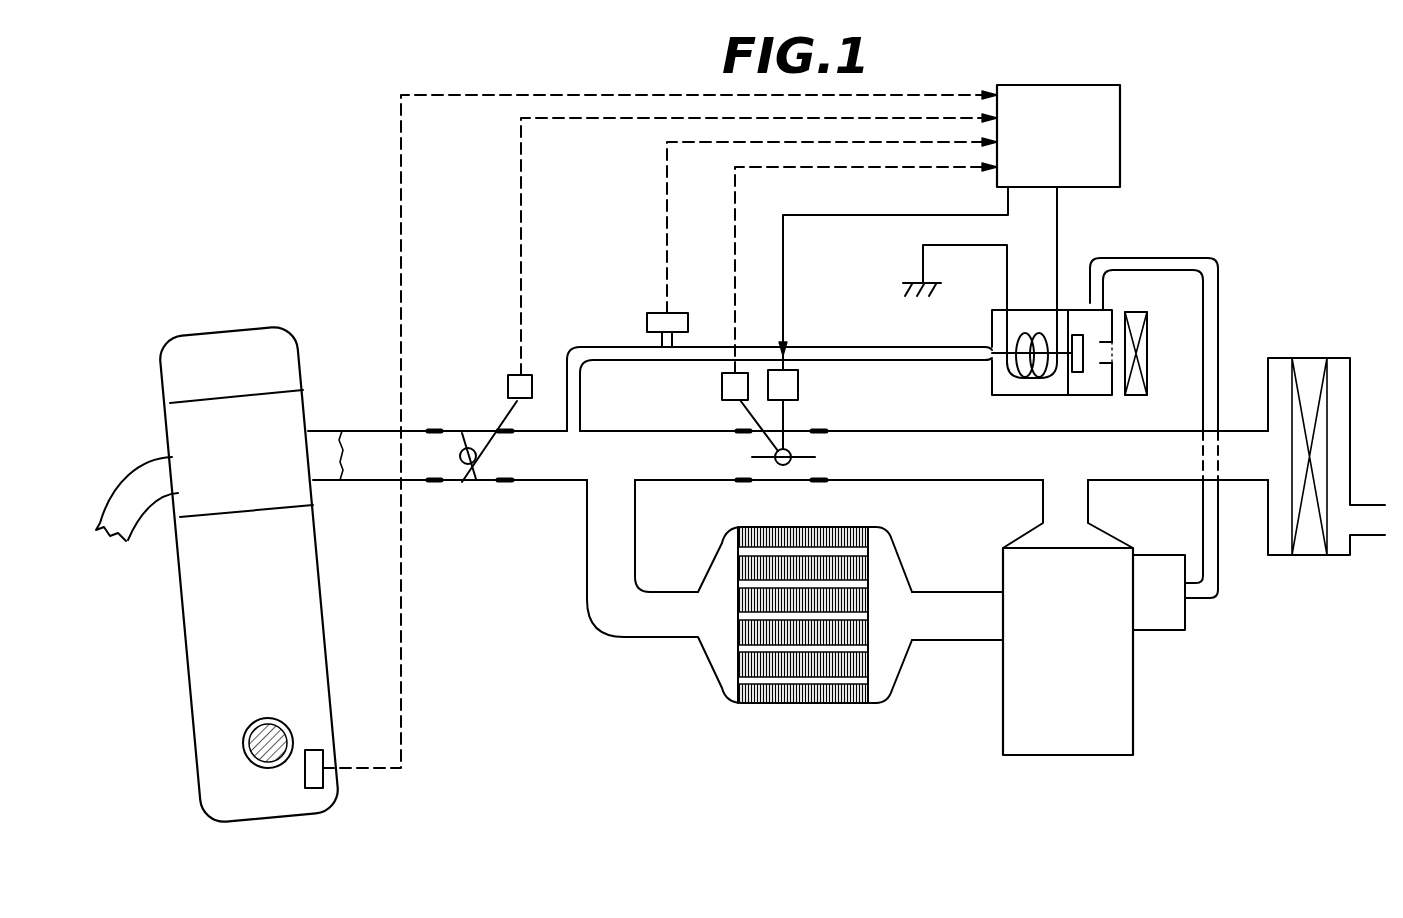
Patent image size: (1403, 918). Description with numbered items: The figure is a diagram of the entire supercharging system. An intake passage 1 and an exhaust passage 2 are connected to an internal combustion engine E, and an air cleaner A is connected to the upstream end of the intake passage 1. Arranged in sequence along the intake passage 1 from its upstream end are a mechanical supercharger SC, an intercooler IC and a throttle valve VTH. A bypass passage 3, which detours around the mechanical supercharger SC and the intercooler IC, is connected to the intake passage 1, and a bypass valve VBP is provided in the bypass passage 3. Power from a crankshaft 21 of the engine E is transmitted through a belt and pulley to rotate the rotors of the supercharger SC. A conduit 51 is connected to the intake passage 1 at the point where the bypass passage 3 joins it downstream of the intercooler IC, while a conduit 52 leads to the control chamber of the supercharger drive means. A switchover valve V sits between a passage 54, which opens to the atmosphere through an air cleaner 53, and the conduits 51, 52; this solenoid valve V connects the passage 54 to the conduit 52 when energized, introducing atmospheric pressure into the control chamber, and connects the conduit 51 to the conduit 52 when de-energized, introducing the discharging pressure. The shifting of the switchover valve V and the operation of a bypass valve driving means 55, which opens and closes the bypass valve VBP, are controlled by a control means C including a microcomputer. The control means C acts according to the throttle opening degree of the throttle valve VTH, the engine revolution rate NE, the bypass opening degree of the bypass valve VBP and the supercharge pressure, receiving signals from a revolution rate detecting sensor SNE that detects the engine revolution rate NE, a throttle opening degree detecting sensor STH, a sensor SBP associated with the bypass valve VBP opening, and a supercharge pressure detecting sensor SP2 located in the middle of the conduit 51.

The intake passage 1 is at (958, 604).
The exhaust passage 2 is at (114, 503).
The bypass passage 3 is at (955, 474).
The crankshaft 21 is at (276, 730).
The conduit 51 is at (858, 346).
The conduit 52 is at (1218, 318).
The air cleaner 53 is at (1144, 342).
The passage 54 is at (1118, 342).
The bypass valve driving means 55 is at (798, 380).
The internal combustion engine E is at (268, 666).
The control means C is at (1067, 159).
The mechanical supercharger SC is at (1070, 648).
The intercooler IC is at (740, 705).
The air cleaner A is at (1315, 358).
The switchover valve V is at (992, 380).
The throttle valve VTH is at (455, 487).
The bypass valve VBP is at (800, 446).
The throttle opening degree detecting sensor STH is at (523, 374).
The bypass valve opening sensor SBP is at (721, 388).
The supercharge pressure detecting sensor SP2 is at (672, 312).
The revolution rate detecting sensor SNE is at (308, 772).
The engine revolution rate NE is at (660, 433).